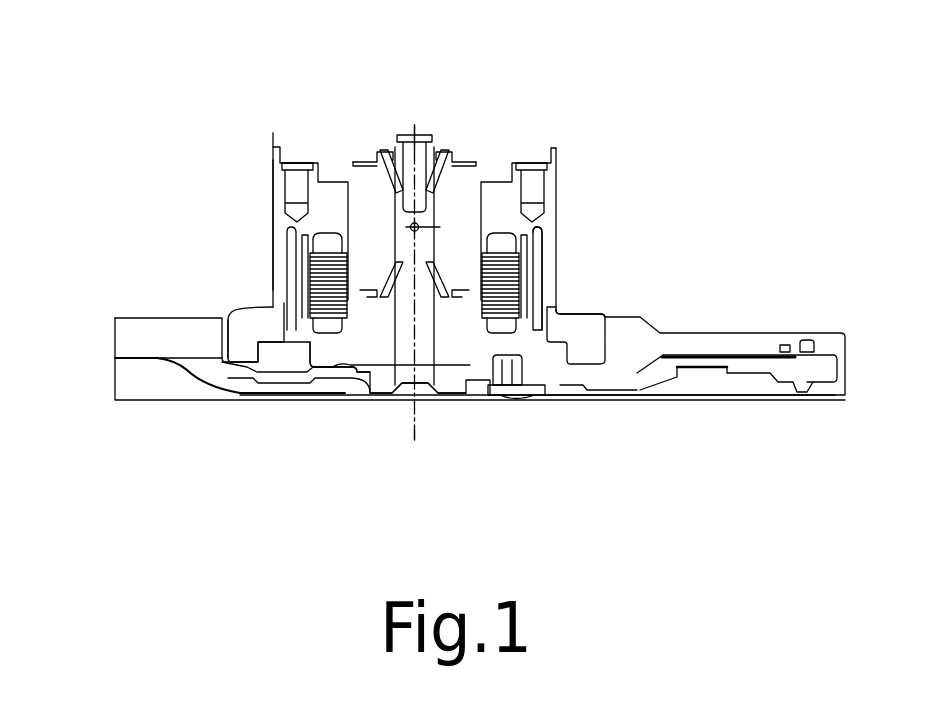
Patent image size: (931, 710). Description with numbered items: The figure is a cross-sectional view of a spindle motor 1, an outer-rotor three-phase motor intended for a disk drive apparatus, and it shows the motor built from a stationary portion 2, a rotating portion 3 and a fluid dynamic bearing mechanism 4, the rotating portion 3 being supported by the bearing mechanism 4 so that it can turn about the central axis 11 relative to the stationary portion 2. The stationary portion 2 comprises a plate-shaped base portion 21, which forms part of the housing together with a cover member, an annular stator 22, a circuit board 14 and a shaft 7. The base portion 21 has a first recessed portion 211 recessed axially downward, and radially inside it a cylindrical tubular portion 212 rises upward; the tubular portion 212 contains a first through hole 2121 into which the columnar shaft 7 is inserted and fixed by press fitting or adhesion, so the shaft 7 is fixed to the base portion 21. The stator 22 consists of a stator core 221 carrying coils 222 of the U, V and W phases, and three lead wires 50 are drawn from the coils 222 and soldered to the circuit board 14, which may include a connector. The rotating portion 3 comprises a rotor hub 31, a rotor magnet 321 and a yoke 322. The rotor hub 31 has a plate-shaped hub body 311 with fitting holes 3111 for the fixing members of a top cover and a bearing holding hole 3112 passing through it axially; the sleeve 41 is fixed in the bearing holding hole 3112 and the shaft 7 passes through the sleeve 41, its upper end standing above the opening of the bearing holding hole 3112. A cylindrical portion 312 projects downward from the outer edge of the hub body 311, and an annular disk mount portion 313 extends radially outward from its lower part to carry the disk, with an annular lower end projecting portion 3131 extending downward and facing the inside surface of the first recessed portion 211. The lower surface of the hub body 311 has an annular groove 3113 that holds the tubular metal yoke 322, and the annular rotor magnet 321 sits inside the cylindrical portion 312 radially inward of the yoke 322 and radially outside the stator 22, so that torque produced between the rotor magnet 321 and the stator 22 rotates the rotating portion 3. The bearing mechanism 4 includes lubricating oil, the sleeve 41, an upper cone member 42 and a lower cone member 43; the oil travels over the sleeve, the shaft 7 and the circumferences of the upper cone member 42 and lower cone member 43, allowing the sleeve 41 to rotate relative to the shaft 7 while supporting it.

The spindle motor 1 is at (60, 48).
The stationary portion 2 is at (72, 424).
The base portion 21 is at (133, 340).
The first recessed portion 211 is at (230, 363).
The tubular portion 212 is at (360, 353).
The first through hole 2121 is at (397, 393).
The circuit board 14 is at (803, 370).
The lead wires 50 is at (512, 363).
The rotating portion 3 is at (147, 72).
The rotor hub 31 is at (277, 150).
The hub body 311 is at (327, 160).
The fitting holes 3111 is at (293, 160).
The bearing holding hole 3112 is at (480, 192).
The groove 3113 is at (535, 227).
The cylindrical portion 312 is at (275, 195).
The disk mount portion 313 is at (240, 310).
The lower end projecting portion 3131 is at (238, 340).
The stator 22 is at (305, 293).
The stator core 221 is at (300, 273).
The coils 222 is at (343, 158).
The rotor magnet 321 is at (300, 265).
The yoke 322 is at (535, 265).
The bearing mechanism 4 is at (444, 126).
The shaft 7 is at (430, 133).
The central axis 11 is at (413, 123).
The sleeve 41 is at (362, 157).
The upper cone member 42 is at (457, 157).
The lower cone member 43 is at (437, 297).